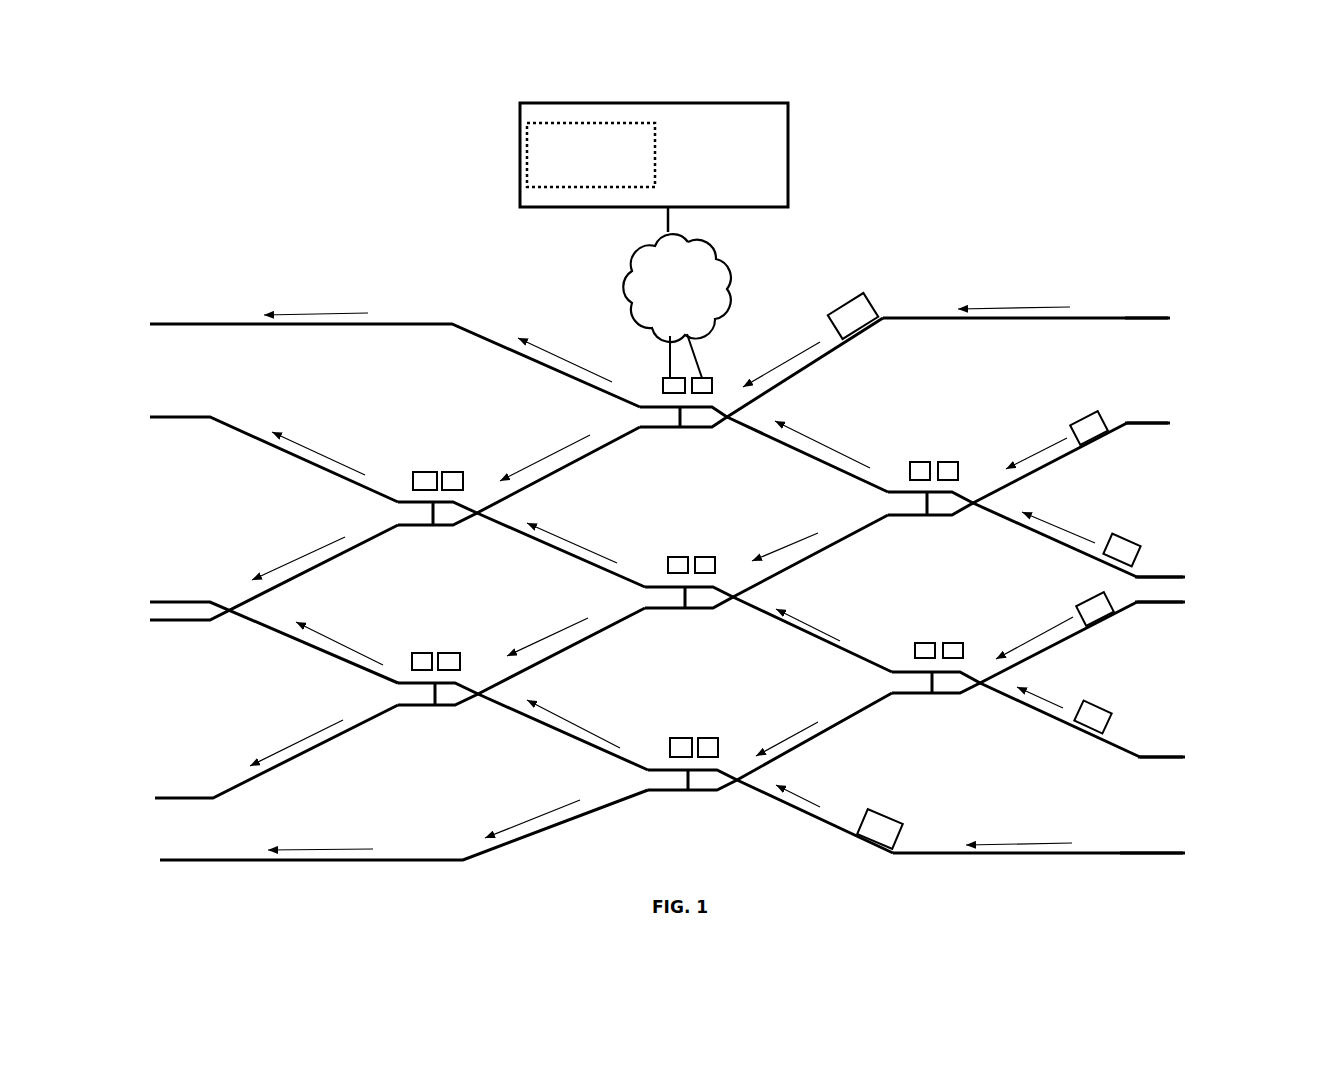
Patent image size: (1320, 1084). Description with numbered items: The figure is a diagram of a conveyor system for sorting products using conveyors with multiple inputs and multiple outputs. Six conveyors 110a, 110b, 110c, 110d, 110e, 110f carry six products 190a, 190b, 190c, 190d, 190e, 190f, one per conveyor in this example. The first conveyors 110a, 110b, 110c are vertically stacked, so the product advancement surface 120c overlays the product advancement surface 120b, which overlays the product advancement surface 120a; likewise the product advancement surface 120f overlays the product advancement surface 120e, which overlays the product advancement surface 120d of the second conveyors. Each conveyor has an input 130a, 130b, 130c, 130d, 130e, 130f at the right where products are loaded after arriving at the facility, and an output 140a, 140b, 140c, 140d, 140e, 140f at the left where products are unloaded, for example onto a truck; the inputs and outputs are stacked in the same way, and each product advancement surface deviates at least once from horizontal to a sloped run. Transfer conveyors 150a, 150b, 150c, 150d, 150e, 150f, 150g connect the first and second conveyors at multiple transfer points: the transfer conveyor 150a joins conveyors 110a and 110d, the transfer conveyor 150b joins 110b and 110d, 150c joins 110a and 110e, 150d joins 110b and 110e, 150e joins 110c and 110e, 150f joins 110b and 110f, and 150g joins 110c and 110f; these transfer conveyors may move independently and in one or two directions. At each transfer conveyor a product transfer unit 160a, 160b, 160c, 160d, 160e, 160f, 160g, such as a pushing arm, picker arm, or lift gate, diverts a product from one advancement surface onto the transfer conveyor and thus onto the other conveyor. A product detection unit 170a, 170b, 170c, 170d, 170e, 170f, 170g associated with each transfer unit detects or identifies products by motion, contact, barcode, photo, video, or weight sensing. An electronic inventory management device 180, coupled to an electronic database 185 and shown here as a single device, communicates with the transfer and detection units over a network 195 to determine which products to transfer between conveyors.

The conveyor 110a is at (1067, 846).
The conveyor 110b is at (1189, 756).
The conveyor 110c is at (1186, 575).
The conveyor 110d is at (1186, 603).
The conveyor 110e is at (1179, 425).
The conveyor 110f is at (1050, 319).
The product advancement surface 120a is at (808, 815).
The product advancement surface 120b is at (1060, 723).
The product advancement surface 120c is at (1007, 527).
The product advancement surface 120d is at (1056, 644).
The product advancement surface 120e is at (1058, 465).
The product advancement surface 120f is at (831, 355).
The input 130a is at (1130, 851).
The input 130b is at (1157, 757).
The input 130c is at (1175, 552).
The input 130d is at (1157, 604).
The input 130e is at (1172, 402).
The input 130f is at (1152, 318).
The output 140a is at (173, 600).
The output 140b is at (167, 416).
The output 140c is at (172, 323).
The output 140d is at (187, 859).
The output 140e is at (177, 797).
The output 140f is at (181, 623).
The transfer conveyor 150a is at (686, 782).
The transfer conveyor 150b is at (930, 684).
The transfer conveyor 150c is at (432, 696).
The transfer conveyor 150d is at (682, 598).
The transfer conveyor 150e is at (925, 504).
The transfer conveyor 150f is at (430, 514).
The transfer conveyor 150g is at (678, 418).
The product transfer unit 160a is at (670, 745).
The product transfer unit 160b is at (915, 652).
The product transfer unit 160c is at (412, 660).
The product transfer unit 160d is at (668, 563).
The product transfer unit 160e is at (910, 470).
The product transfer unit 160f is at (413, 479).
The product transfer unit 160g is at (663, 385).
The product detection unit 170a is at (718, 747).
The product detection unit 170b is at (963, 648).
The product detection unit 170c is at (458, 656).
The product detection unit 170d is at (735, 545).
The product detection unit 170e is at (958, 470).
The product detection unit 170f is at (463, 477).
The product detection unit 170g is at (713, 384).
The electronic inventory management device 180 is at (792, 162).
The electronic database 185 is at (570, 188).
The product 190a is at (888, 815).
The product 190b is at (1093, 703).
The product 190c is at (1118, 533).
The product 190d is at (1085, 603).
The product 190e is at (1080, 418).
The product 190f is at (872, 300).
The network 195 is at (735, 249).